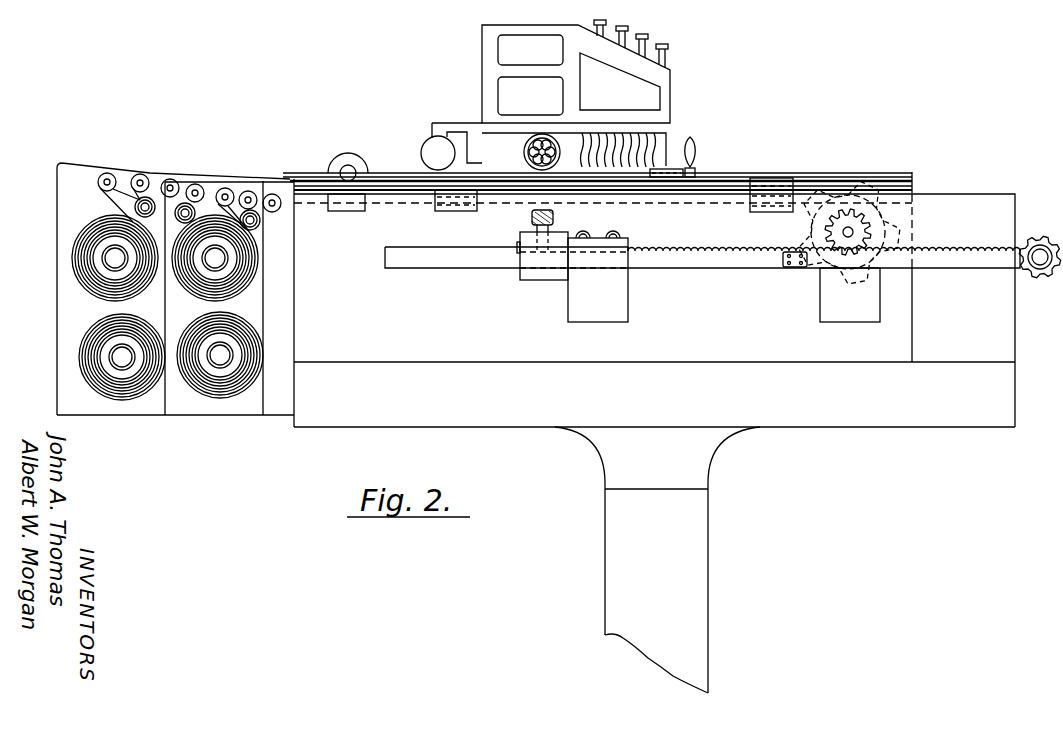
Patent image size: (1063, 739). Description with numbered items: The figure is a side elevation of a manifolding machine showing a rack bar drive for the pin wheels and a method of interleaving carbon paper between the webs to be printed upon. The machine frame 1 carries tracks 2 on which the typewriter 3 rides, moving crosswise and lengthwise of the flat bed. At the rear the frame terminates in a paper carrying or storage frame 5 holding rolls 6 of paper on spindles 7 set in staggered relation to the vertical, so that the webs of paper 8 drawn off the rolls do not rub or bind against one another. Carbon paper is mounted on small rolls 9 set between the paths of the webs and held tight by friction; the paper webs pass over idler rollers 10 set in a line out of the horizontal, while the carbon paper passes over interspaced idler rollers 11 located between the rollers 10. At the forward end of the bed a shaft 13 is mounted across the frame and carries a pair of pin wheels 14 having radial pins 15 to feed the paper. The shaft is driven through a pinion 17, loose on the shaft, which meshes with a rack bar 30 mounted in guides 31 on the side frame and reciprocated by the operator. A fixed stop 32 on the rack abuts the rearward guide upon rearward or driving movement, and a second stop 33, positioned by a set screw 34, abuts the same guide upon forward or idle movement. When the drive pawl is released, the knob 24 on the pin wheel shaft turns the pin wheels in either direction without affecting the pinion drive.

The machine frame 1 is at (405, 372).
The tracks 2 is at (705, 170).
The typewriter 3 is at (672, 121).
The paper carrying or storage frame 5 is at (270, 395).
The rolls of paper 6 is at (80, 288).
The spindles 7 is at (112, 262).
The webs of paper 8 is at (250, 210).
The small rolls of carbon paper 9 is at (152, 200).
The idler rollers 10 is at (110, 174).
The interspaced idler rollers 11 is at (143, 175).
The shaft 13 is at (886, 150).
The pin wheels 14 is at (885, 218).
The radial pins 15 is at (858, 185).
The pinion 17 is at (855, 225).
The knob 24 is at (823, 223).
The rack bar 30 is at (684, 268).
The guides 31 is at (573, 298).
The fixed stop 32 is at (785, 265).
The stop 33 is at (520, 280).
The set screw 34 is at (530, 218).